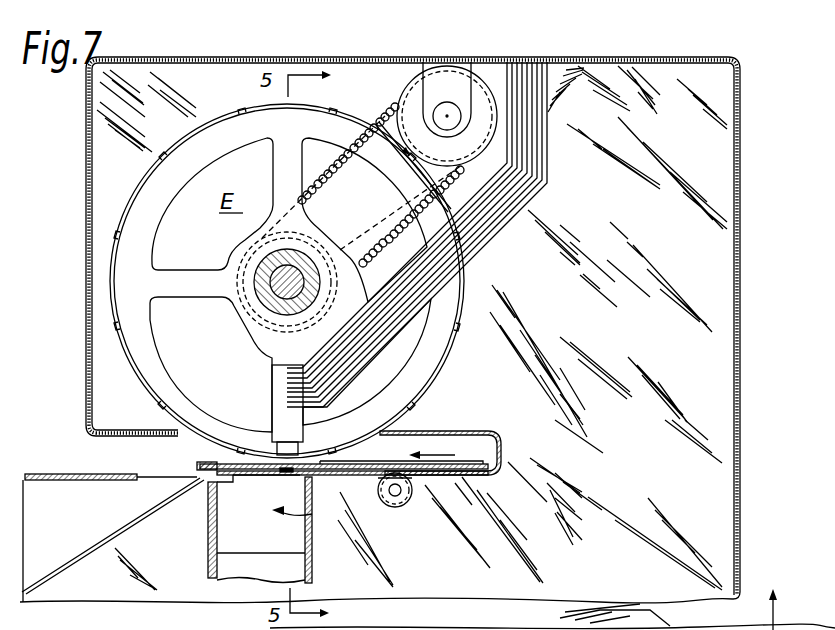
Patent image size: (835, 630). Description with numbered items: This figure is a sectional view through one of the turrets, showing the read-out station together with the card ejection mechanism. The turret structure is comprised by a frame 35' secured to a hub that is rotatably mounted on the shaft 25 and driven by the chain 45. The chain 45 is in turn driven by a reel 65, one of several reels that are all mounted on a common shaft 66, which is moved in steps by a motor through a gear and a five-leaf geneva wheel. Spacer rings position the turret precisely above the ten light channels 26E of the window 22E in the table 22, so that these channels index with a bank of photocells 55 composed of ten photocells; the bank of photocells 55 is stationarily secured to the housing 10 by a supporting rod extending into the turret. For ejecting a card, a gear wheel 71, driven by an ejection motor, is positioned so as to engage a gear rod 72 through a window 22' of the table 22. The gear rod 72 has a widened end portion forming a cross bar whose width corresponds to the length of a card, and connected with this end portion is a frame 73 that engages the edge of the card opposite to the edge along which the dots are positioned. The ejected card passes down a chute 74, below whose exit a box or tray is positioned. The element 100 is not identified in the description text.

The housing 10 is at (736, 278).
The table 22 is at (273, 483).
The window 22' is at (411, 502).
The window 22E is at (233, 478).
The shaft 25 is at (289, 283).
The light channels 26E is at (313, 506).
The frame 35' is at (211, 357).
The chain 45 is at (330, 178).
The bank of photocells 55 is at (286, 410).
The reel 65 is at (413, 88).
The common shaft 66 is at (451, 122).
The gear wheel 71 is at (388, 507).
The gear rod 72 is at (467, 470).
The frame 73 is at (196, 462).
The chute 74 is at (123, 527).
The fastener 100 is at (236, 466).